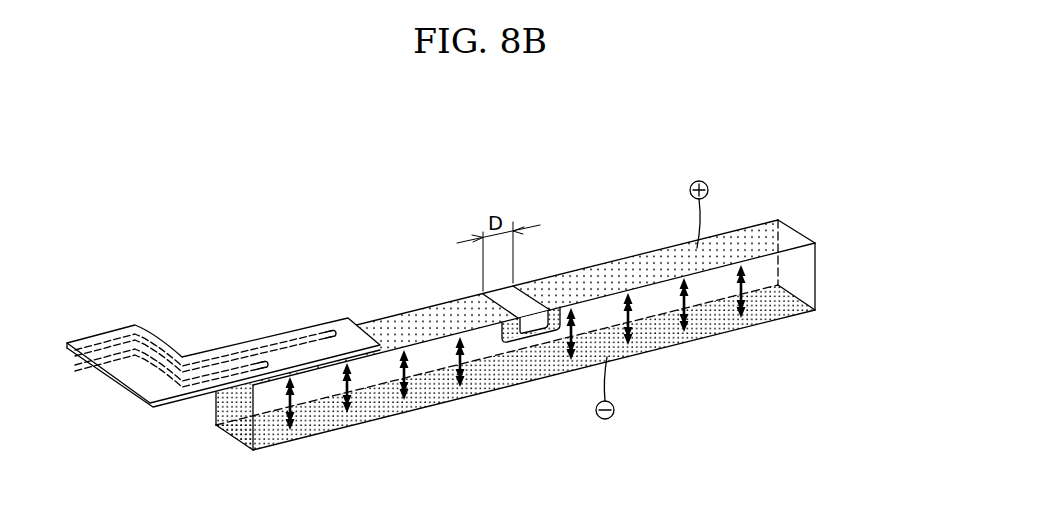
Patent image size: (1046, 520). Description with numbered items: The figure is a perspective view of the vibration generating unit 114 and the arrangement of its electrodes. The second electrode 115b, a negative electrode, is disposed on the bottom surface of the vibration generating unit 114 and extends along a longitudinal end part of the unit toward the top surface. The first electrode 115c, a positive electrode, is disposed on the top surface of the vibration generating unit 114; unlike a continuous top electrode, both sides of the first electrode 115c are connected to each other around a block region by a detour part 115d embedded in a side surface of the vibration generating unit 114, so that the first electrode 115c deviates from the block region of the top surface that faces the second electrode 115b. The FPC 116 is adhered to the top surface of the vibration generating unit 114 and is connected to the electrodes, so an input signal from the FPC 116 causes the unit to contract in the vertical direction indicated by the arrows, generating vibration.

The vibration generating unit 114 is at (553, 348).
The second electrode 115b is at (484, 385).
The first electrode 115c is at (587, 277).
The detour part 115d is at (533, 337).
The FPC 116 is at (233, 347).